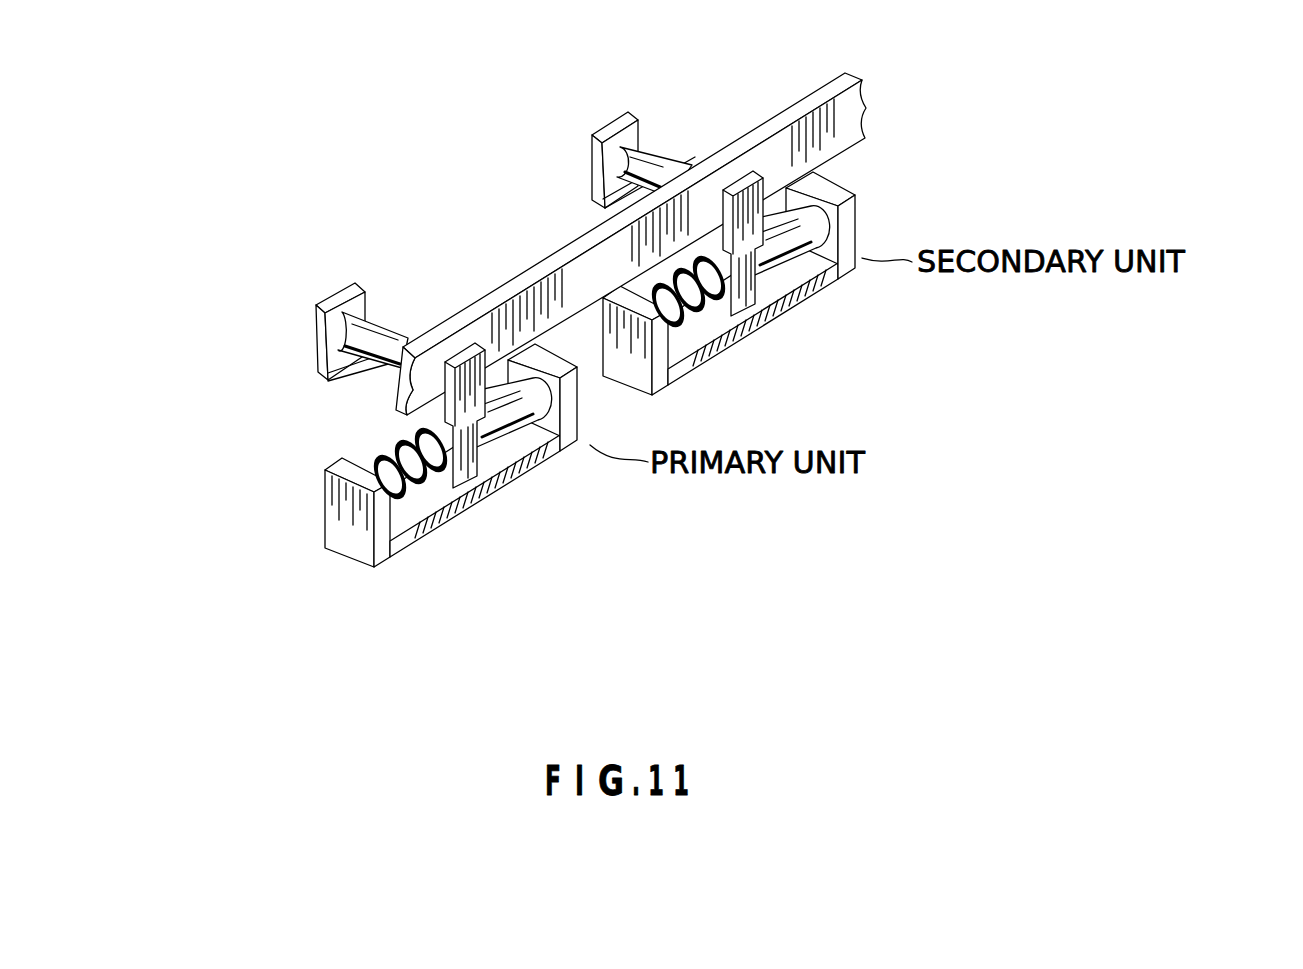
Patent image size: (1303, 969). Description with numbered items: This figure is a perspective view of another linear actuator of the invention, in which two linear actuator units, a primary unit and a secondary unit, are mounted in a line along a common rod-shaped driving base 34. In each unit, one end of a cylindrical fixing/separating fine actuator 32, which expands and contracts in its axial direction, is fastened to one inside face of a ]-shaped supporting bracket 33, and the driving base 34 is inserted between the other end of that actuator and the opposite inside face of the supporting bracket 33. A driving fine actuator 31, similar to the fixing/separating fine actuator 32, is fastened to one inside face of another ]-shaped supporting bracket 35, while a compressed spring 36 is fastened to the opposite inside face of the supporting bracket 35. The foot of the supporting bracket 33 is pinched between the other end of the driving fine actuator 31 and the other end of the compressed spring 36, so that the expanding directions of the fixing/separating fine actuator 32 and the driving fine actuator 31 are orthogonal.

The driving fine actuator 31 is at (806, 256).
The fixing/separating fine actuator 32 is at (386, 314).
The supporting bracket 33 is at (318, 404).
The driving base 34 is at (520, 279).
The supporting bracket 35 is at (790, 300).
The compressed spring 36 is at (713, 306).